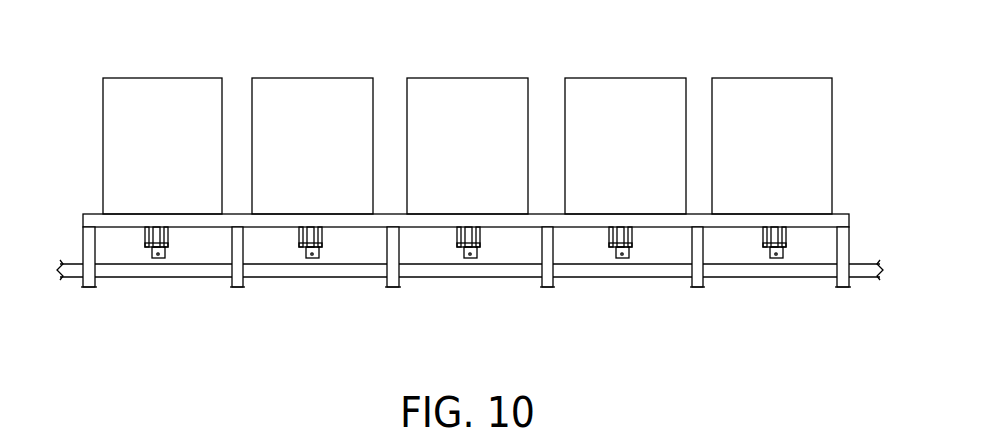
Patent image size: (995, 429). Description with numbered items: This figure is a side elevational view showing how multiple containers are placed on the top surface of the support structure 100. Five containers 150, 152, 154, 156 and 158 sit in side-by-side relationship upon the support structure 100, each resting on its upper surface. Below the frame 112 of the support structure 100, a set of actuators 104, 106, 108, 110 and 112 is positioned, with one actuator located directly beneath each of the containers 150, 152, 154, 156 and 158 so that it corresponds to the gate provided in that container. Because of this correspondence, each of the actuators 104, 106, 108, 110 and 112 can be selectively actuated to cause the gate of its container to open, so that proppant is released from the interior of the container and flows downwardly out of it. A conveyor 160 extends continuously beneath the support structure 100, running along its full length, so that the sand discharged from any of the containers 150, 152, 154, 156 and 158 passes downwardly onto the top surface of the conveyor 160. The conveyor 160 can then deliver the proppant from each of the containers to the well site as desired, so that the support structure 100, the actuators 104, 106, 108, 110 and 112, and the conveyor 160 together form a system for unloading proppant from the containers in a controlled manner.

The support structure 100 is at (92, 218).
The actuator 104 is at (168, 245).
The actuator 106 is at (322, 242).
The actuator 108 is at (480, 240).
The actuator 110 is at (632, 247).
The frame 112 is at (838, 218).
The container 150 is at (153, 90).
The container 152 is at (310, 90).
The container 154 is at (465, 94).
The container 156 is at (624, 90).
The container 158 is at (772, 92).
The conveyor 160 is at (188, 275).